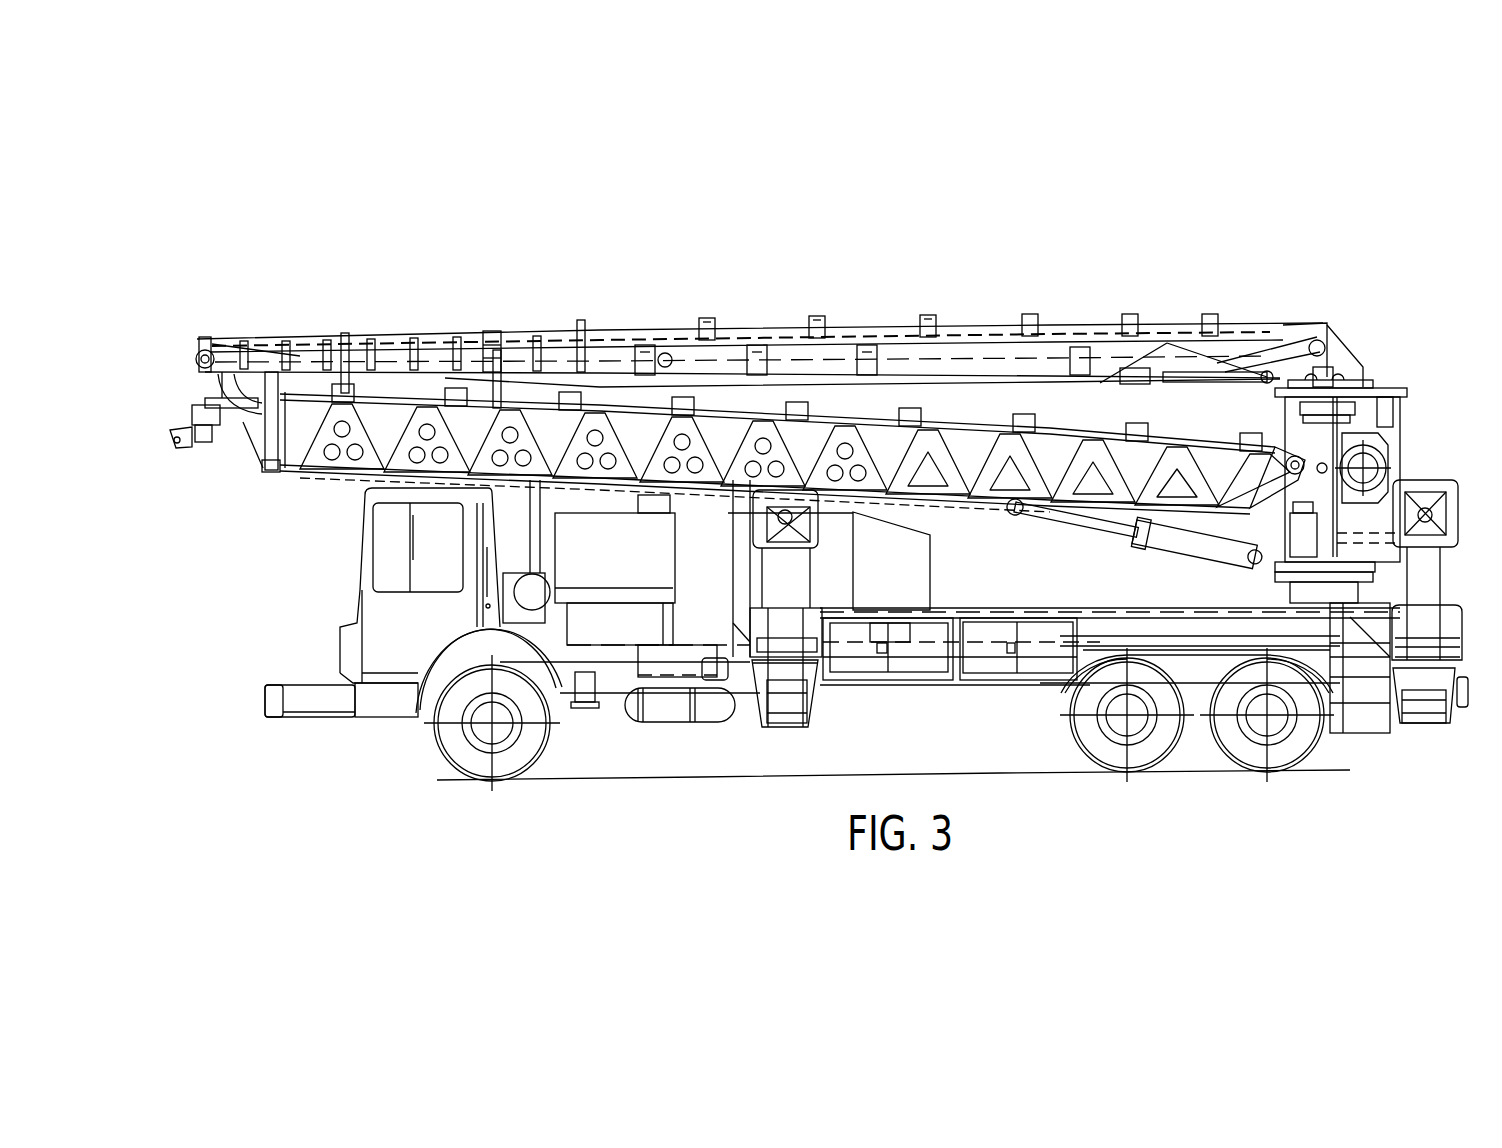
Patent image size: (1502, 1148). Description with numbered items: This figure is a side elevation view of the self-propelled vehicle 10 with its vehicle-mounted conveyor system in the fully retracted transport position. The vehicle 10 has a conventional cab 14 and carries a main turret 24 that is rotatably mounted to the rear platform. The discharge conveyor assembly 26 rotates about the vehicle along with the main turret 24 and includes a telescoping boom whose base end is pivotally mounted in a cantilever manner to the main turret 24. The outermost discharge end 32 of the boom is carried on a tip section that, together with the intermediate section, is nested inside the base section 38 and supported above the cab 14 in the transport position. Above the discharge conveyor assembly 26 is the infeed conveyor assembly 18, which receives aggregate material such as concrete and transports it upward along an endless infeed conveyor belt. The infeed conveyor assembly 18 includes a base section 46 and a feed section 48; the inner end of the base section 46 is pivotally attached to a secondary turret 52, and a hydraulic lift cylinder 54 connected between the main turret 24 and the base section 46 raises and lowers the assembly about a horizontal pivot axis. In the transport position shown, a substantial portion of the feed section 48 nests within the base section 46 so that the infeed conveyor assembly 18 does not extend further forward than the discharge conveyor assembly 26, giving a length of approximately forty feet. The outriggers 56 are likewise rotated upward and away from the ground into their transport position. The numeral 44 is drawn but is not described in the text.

The self-propelled vehicle 10 is at (821, 255).
The cab 14 is at (380, 624).
The infeed conveyor assembly 18 is at (970, 312).
The main turret 24 is at (1395, 452).
The discharge conveyor assembly 26 is at (961, 515).
The discharge end 32 is at (192, 417).
The base section 38 is at (326, 478).
The hydraulic cylinder 44 is at (1172, 543).
The base section 46 is at (683, 352).
The feed section 48 is at (490, 326).
The secondary turret 52 is at (1310, 328).
The hydraulic lift cylinder 54 is at (1238, 378).
The outriggers 56 is at (790, 572).